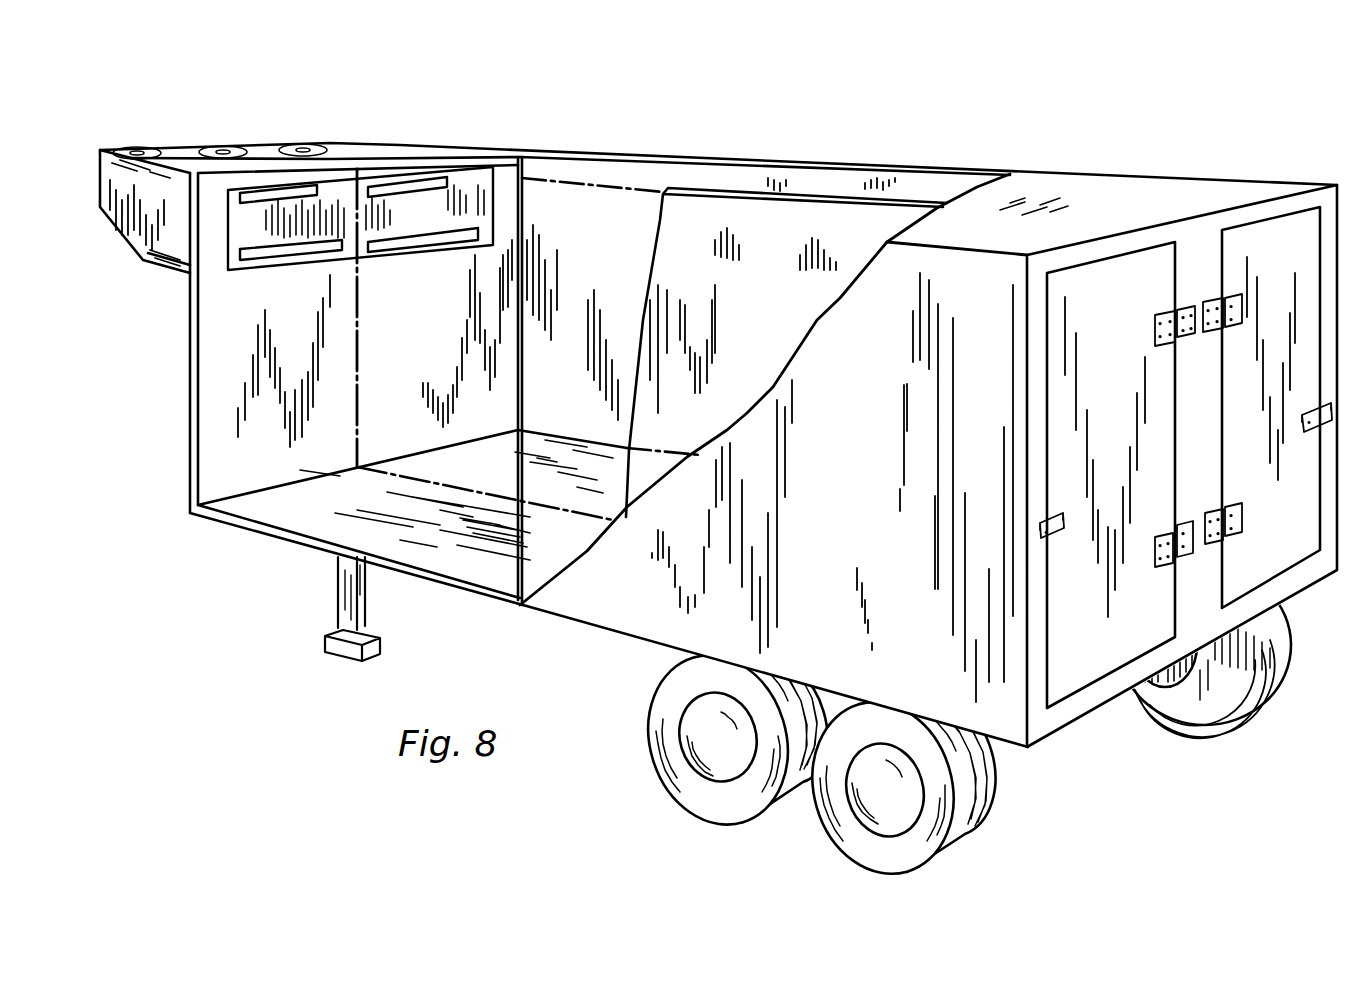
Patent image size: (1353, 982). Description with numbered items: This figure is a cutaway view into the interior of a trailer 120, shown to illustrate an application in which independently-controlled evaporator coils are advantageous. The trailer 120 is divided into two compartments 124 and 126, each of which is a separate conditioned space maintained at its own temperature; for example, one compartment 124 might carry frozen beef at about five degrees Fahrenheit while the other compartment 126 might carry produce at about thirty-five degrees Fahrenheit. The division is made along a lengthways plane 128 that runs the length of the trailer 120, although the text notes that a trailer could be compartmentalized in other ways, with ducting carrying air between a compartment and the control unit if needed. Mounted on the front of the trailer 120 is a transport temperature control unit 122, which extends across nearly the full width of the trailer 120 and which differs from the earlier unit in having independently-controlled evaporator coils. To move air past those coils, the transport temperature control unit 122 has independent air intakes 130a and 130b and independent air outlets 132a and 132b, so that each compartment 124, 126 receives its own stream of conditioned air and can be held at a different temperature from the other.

The trailer 120 is at (1013, 108).
The transport temperature control unit 122 is at (378, 142).
The compartment 124 is at (740, 185).
The compartment 126 is at (807, 225).
The lengthways plane 128 is at (360, 337).
The air intake 130a is at (463, 237).
The air intake 130b is at (320, 247).
The air outlet 132a is at (427, 177).
The air outlet 132b is at (250, 193).